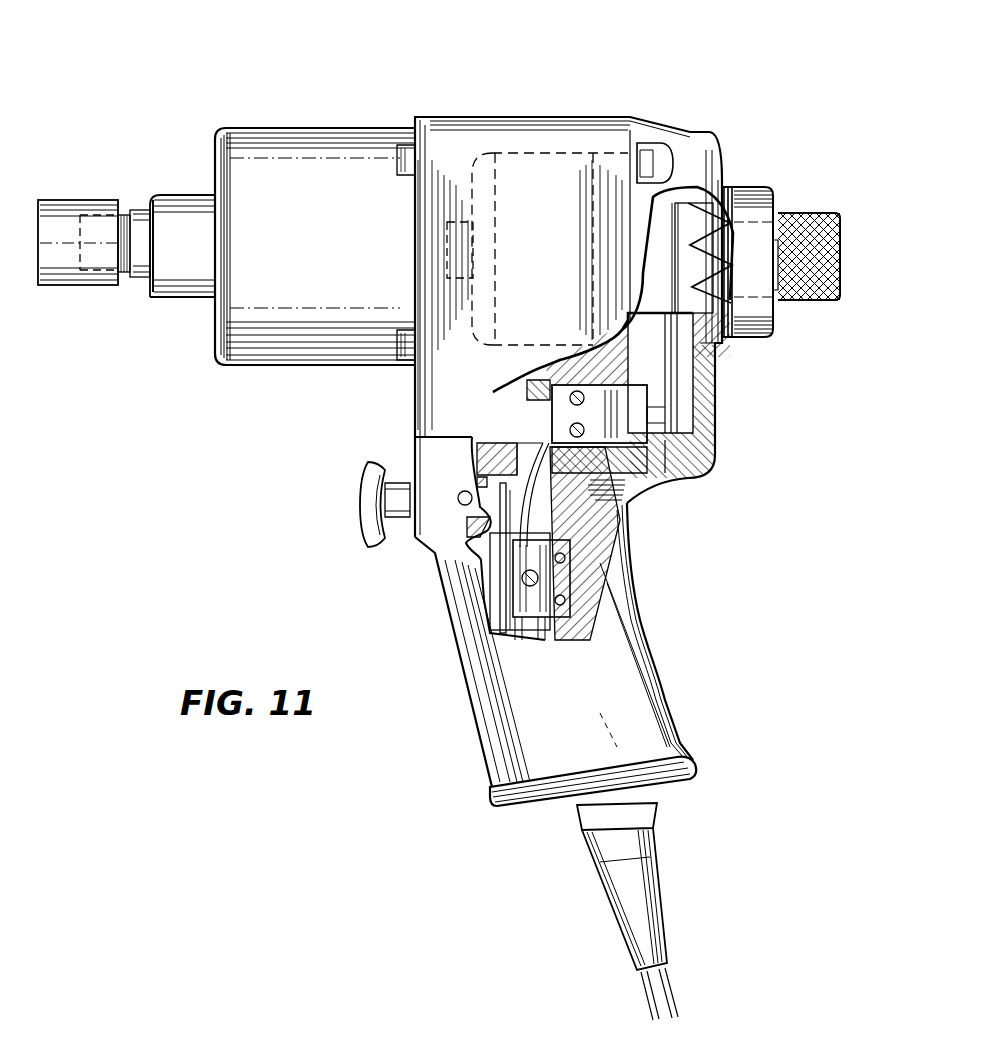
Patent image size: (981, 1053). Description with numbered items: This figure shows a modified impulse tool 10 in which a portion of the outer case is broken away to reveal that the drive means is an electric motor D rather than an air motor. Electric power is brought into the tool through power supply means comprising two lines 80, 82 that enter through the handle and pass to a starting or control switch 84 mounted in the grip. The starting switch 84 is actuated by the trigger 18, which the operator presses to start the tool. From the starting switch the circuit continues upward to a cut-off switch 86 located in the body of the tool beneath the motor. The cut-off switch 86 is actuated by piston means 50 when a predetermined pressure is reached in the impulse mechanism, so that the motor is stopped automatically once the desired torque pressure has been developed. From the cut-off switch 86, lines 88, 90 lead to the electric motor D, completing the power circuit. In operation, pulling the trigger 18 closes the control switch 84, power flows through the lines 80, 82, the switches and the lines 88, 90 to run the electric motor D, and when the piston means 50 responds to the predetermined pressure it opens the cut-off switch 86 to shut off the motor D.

The modified tool 10 is at (430, 88).
The electric motor D is at (535, 187).
The piston means 50 is at (703, 133).
The line 88 is at (536, 388).
The line 90 is at (493, 391).
The cut-off switch 86 is at (567, 413).
The trigger 18 is at (372, 500).
The starting or control switch 84 is at (497, 587).
The line 80 is at (522, 640).
The line 82 is at (541, 640).